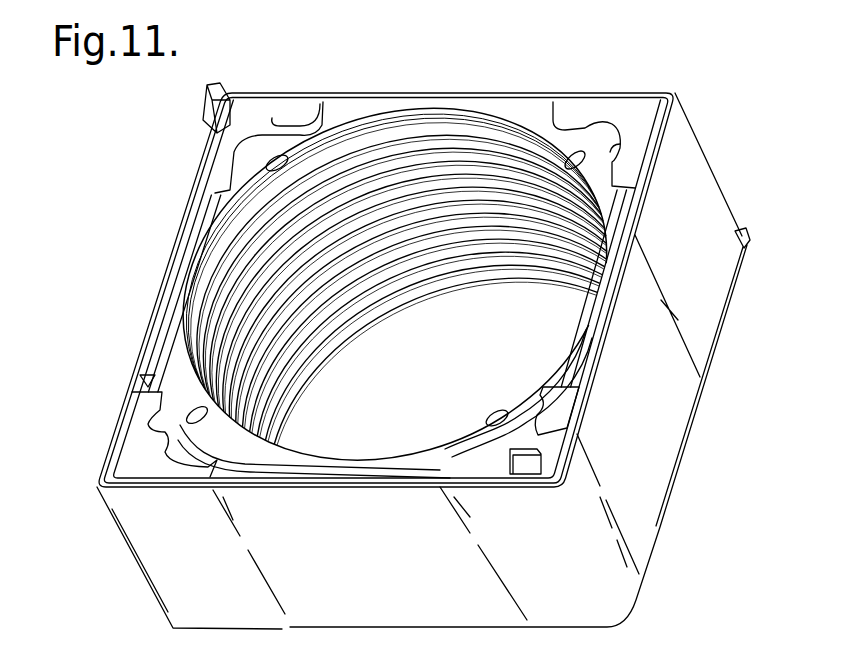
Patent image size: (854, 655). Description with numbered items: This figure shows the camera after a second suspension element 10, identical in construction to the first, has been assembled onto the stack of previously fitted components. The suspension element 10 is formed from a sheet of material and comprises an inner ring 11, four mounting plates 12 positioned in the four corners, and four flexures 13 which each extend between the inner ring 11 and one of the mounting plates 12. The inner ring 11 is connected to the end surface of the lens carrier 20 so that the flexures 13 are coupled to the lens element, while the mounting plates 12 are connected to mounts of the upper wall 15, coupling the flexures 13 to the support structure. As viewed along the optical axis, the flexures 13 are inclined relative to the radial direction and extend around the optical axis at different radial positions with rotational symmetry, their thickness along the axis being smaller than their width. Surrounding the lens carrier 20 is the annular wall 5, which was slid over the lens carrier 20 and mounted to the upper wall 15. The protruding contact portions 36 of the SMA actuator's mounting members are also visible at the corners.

The annular wall 5 is at (700, 180).
The suspension element 10 is at (437, 105).
The inner ring 11 is at (197, 263).
The mounting plate 12 is at (263, 110).
The flexure 13 is at (474, 107).
The upper wall 15 is at (733, 283).
The lens carrier 20 is at (542, 110).
The contact portion 36 is at (214, 102).